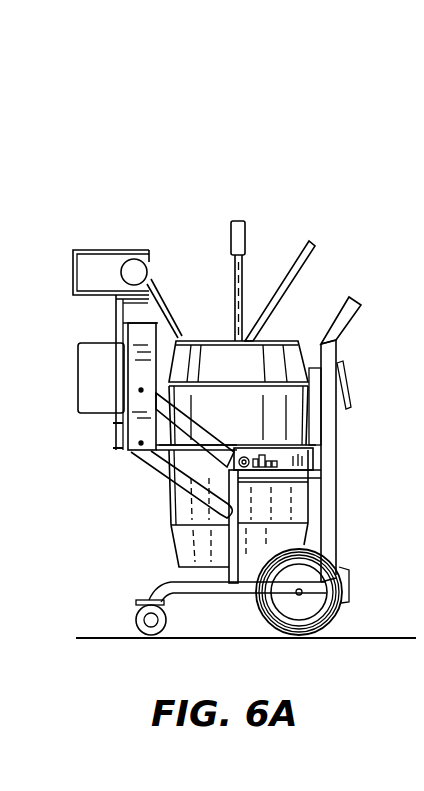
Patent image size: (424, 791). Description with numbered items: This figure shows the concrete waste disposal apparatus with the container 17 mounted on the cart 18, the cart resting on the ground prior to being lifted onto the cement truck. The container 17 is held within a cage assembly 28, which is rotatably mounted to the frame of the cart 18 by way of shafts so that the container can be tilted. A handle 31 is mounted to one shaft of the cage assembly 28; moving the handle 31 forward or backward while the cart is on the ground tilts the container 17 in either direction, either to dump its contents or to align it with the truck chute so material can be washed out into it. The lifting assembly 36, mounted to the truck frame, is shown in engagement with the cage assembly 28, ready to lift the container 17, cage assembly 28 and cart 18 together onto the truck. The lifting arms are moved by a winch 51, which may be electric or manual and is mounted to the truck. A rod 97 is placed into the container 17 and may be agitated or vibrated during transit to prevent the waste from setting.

The winch 51 is at (133, 241).
The handle 31 is at (244, 240).
The rod 97 is at (308, 256).
The container 17 is at (283, 341).
The cage assembly 28 is at (306, 460).
The cart 18 is at (330, 502).
The lifting assembly 36 is at (158, 501).